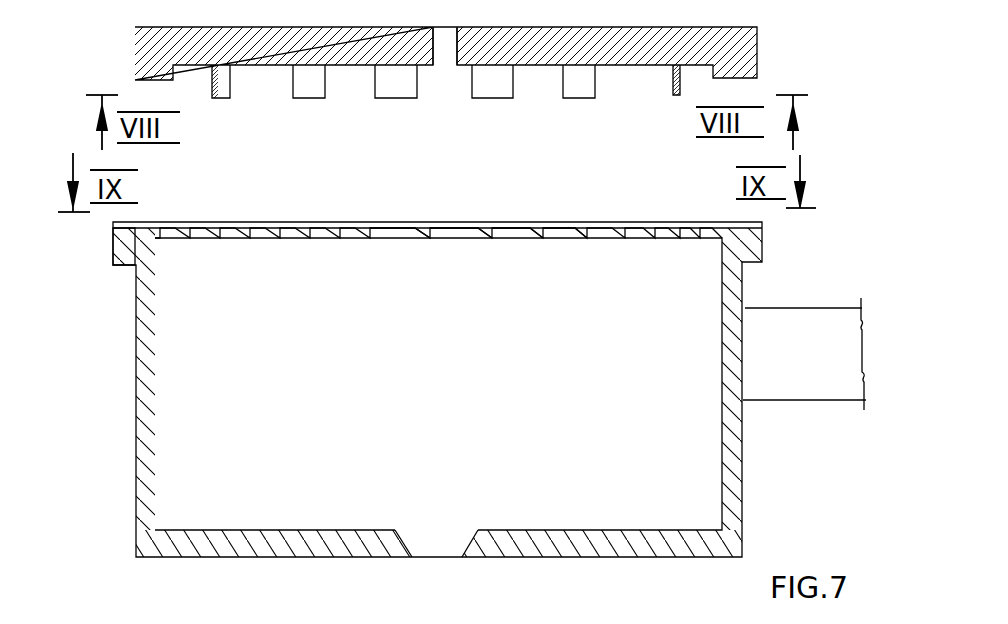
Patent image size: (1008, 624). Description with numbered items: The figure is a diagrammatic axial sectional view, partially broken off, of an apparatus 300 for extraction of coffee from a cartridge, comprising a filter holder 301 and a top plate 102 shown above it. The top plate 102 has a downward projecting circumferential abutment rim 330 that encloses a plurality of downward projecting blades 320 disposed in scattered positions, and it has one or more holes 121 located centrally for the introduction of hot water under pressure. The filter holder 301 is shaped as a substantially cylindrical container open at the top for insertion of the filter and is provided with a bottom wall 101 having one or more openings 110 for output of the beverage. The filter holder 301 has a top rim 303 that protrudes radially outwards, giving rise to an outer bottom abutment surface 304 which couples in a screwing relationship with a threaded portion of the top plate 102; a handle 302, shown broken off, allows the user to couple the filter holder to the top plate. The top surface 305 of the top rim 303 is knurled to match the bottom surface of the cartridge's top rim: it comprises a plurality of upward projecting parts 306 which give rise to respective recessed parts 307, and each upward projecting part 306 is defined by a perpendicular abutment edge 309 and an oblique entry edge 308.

The circumferential abutment rim 330 is at (409, 96).
The top plate 102 is at (178, 46).
The cover projections 320 is at (310, 88).
The holes 121 is at (445, 52).
The top surface 305 is at (438, 202).
The upward projecting parts 306 is at (398, 230).
The recessed parts 307 is at (483, 232).
The oblique entry edge 308 is at (558, 250).
The perpendicular abutment edge 309 is at (628, 234).
The apparatus 300 is at (800, 270).
The filter holder 301 is at (481, 404).
The handle 302 is at (812, 380).
The top rim 303 is at (117, 248).
The outer bottom abutment surface 304 is at (124, 266).
The bottom wall 101 is at (285, 545).
The openings 110 is at (440, 547).